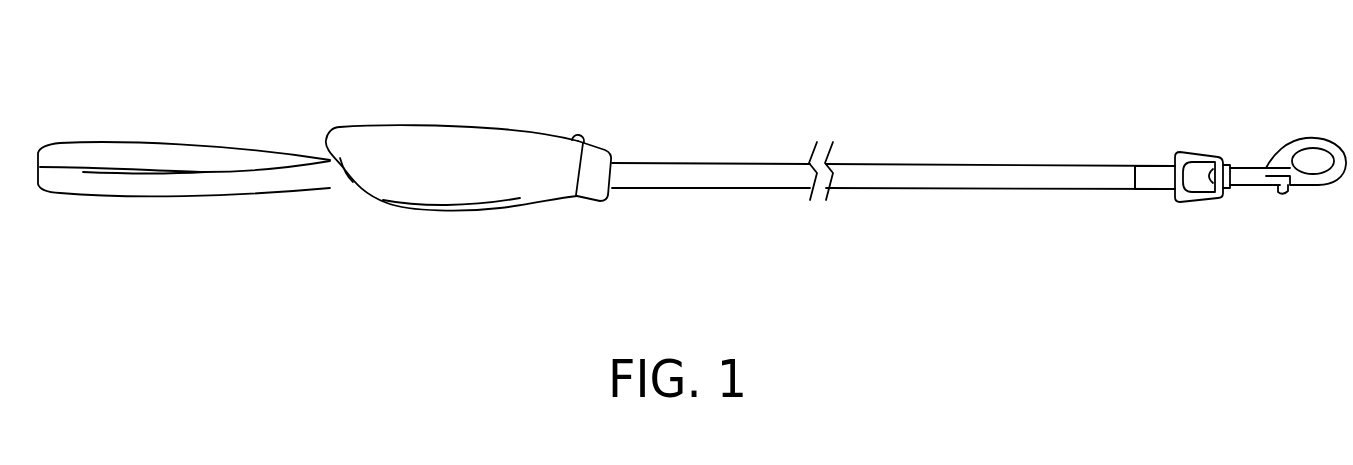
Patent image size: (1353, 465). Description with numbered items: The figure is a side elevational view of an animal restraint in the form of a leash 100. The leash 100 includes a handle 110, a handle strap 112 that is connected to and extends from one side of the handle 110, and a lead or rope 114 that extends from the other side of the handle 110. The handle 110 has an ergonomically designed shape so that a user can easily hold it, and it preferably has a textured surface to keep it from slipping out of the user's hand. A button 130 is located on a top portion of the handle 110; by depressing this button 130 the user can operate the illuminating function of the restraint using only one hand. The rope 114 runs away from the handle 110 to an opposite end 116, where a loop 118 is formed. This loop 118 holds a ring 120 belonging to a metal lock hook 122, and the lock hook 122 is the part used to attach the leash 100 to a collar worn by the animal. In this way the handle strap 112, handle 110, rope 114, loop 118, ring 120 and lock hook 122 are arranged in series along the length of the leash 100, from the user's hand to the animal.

The leash 100 is at (588, 70).
The handle 110 is at (387, 137).
The handle strap 112 is at (145, 190).
The lead or rope 114 is at (763, 188).
The opposite end 116 is at (1167, 190).
The loop 118 is at (1155, 172).
The ring 120 is at (1197, 157).
The metal lock hook 122 is at (1262, 178).
The button 130 is at (580, 137).